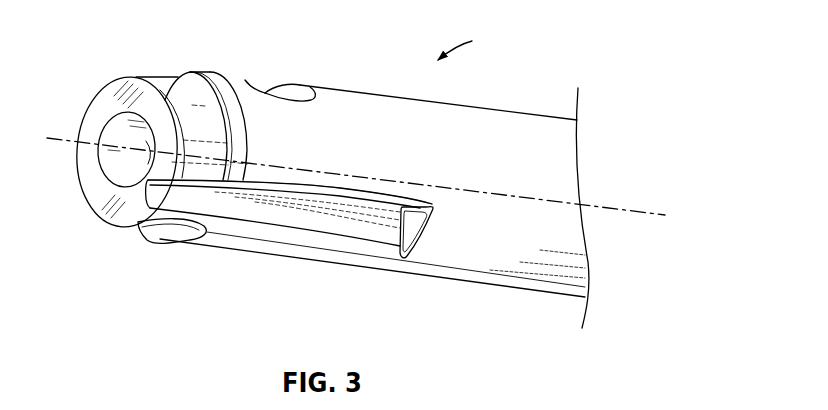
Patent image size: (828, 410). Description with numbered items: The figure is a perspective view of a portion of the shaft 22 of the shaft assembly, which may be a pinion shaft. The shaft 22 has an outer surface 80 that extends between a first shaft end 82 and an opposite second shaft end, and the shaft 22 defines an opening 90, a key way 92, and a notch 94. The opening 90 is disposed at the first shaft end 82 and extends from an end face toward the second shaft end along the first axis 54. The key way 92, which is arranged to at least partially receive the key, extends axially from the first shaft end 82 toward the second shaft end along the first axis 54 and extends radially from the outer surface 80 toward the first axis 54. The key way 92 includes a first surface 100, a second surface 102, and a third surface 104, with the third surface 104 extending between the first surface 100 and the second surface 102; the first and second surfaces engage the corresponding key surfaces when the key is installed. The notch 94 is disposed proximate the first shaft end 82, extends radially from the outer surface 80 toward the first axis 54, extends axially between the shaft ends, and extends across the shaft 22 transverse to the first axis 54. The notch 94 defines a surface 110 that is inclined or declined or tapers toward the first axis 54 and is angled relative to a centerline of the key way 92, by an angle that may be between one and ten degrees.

The shaft 22 is at (470, 43).
The first axis 54 is at (666, 211).
The outer surface 80 is at (515, 130).
The first shaft end 82 is at (220, 243).
The opening 90 is at (123, 189).
The key way 92 is at (412, 251).
The notch 94 is at (267, 78).
The first surface 100 is at (285, 234).
The second surface 102 is at (340, 203).
The third surface 104 is at (377, 218).
The surface 110 is at (265, 92).